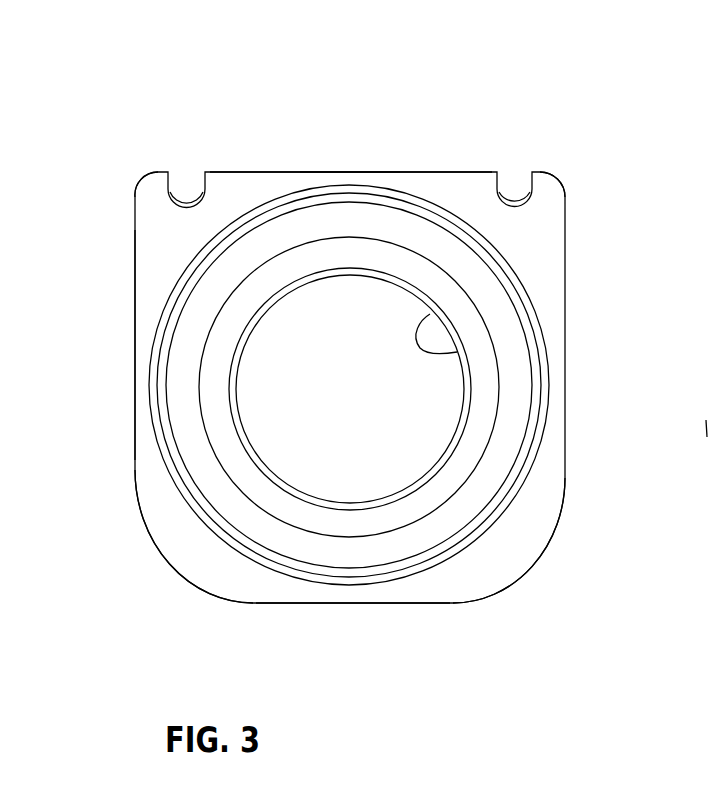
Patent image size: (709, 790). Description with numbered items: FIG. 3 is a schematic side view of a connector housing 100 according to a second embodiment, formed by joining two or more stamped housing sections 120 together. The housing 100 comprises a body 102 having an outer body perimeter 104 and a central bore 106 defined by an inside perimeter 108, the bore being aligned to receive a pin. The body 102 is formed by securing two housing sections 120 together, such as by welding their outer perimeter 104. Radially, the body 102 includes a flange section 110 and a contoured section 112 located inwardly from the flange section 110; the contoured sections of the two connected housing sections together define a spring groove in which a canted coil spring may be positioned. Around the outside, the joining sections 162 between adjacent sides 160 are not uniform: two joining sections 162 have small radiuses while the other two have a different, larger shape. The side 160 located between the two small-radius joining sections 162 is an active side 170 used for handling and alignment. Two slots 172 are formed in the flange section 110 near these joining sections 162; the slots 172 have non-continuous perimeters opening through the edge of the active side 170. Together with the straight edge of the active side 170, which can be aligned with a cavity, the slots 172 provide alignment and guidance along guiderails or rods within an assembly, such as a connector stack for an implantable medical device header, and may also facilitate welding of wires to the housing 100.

The connector housing 100 is at (369, 377).
The body 102 is at (540, 256).
The outer body perimeter 104 is at (134, 280).
The bore 106 is at (386, 412).
The inside perimeter 108 is at (457, 352).
The flange section 110 is at (172, 533).
The contoured section 112 is at (487, 478).
The housing section 120 is at (200, 445).
The side 160 is at (270, 172).
The joining section 162 is at (142, 178).
The active side 170 is at (354, 172).
The slot 172 is at (187, 197).